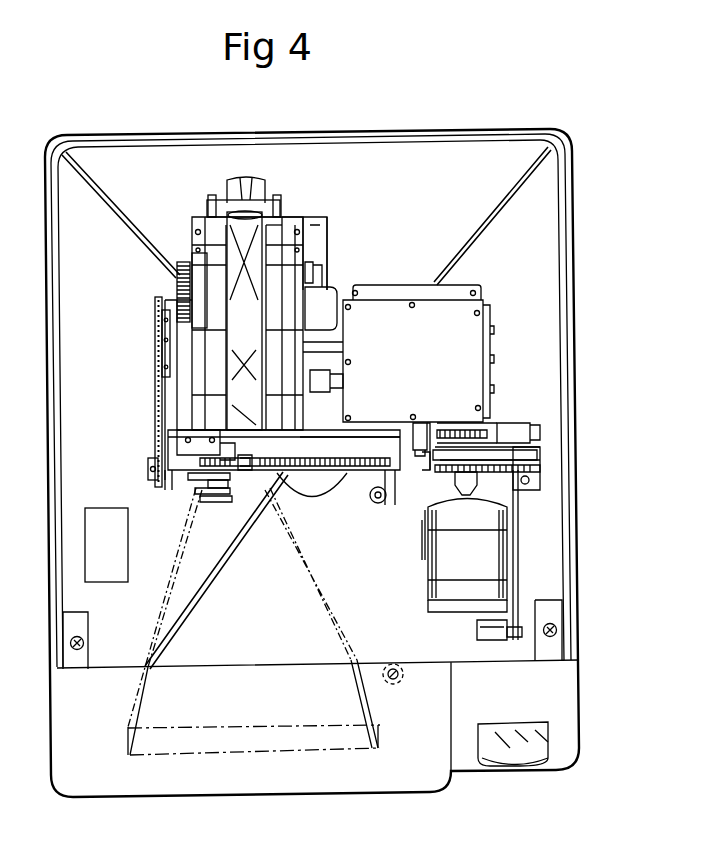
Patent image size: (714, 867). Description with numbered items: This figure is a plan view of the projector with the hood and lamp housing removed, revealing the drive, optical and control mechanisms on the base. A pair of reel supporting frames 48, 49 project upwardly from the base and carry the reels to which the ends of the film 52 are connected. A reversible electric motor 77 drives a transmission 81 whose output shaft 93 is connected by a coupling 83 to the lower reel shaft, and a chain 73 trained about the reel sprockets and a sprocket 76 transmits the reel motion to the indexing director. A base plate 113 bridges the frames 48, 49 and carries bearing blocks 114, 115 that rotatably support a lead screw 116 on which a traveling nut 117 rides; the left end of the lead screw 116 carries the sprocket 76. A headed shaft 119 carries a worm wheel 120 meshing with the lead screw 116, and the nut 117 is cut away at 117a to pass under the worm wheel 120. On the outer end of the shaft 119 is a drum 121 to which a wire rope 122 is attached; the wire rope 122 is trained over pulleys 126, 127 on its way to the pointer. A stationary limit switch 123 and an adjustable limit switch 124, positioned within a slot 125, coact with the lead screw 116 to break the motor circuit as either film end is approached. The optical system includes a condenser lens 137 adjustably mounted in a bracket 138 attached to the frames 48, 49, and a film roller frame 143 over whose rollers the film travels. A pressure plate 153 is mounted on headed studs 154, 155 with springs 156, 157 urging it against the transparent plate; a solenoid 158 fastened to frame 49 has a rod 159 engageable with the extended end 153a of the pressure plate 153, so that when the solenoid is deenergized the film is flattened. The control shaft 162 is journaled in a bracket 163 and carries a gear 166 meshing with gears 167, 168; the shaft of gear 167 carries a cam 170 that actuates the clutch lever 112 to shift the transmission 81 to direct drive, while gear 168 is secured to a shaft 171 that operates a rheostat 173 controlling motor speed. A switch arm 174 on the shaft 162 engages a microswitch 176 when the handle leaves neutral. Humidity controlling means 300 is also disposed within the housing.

The reel supporting frame 48 is at (197, 263).
The reel supporting frame 49 is at (297, 260).
The film 52 is at (254, 343).
The link belt or chain 73 is at (154, 413).
The sprocket 76 is at (149, 481).
The reversible electric motor 77 is at (475, 565).
The transmission 81 is at (494, 311).
The coupling 83 is at (331, 386).
The output shaft 93 is at (343, 349).
The clutch lever 112 is at (426, 468).
The base plate 113 is at (286, 480).
The bearing block 114 is at (168, 490).
The bearing block 115 is at (418, 462).
The lead screw 116 is at (318, 478).
The traveling nut 117 is at (248, 455).
The cut-away portion of nut 117a is at (253, 460).
The headed shaft 119 is at (220, 450).
The worm wheel 120 is at (210, 490).
The drum 121 is at (222, 496).
The wire rope 122 is at (258, 492).
The limit switch 123 is at (185, 432).
The limit switch 124 is at (422, 423).
The slot 125 is at (311, 432).
The pulley 126 is at (388, 500).
The pulley 127 is at (395, 664).
The condenser lens 137 is at (247, 178).
The bracket 138 is at (217, 202).
The film roller frame 143 is at (282, 223).
The pressure plate 153 is at (305, 215).
The extended end of pressure plate 153a is at (327, 217).
The headed stud 154 is at (208, 196).
The headed stud 155 is at (277, 205).
The spring 156 is at (225, 213).
The spring 157 is at (297, 222).
The solenoid 158 is at (336, 290).
The rod 159 is at (322, 262).
The shaft 162 is at (519, 547).
The bracket 163 is at (513, 460).
The gear 166 is at (541, 477).
The gear 167 is at (445, 430).
The gear 168 is at (533, 445).
The cam 170 is at (498, 435).
The shaft 171 is at (527, 427).
The rheostat 173 is at (520, 428).
The switch arm 174 is at (513, 617).
The microswitch 176 is at (472, 633).
The humidity controlling means 300 is at (115, 578).